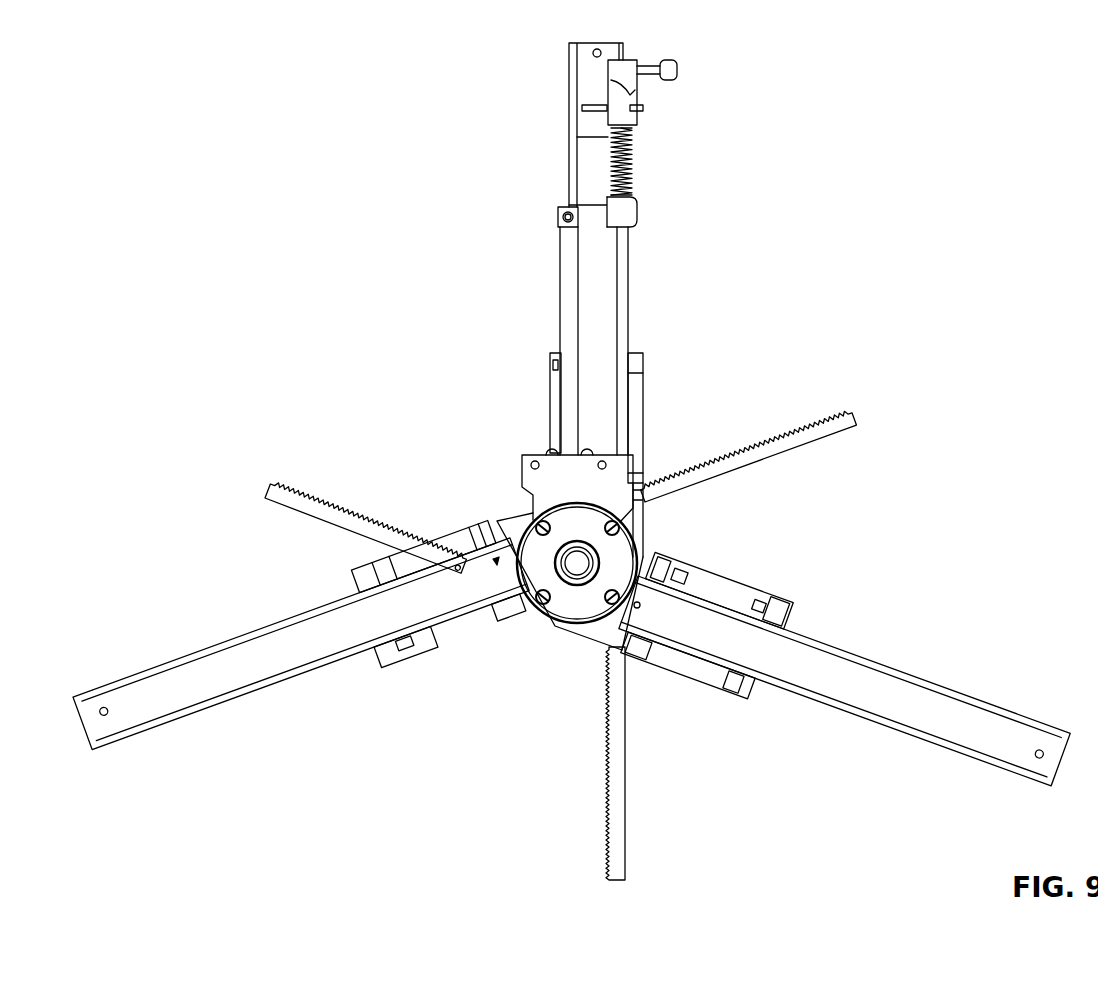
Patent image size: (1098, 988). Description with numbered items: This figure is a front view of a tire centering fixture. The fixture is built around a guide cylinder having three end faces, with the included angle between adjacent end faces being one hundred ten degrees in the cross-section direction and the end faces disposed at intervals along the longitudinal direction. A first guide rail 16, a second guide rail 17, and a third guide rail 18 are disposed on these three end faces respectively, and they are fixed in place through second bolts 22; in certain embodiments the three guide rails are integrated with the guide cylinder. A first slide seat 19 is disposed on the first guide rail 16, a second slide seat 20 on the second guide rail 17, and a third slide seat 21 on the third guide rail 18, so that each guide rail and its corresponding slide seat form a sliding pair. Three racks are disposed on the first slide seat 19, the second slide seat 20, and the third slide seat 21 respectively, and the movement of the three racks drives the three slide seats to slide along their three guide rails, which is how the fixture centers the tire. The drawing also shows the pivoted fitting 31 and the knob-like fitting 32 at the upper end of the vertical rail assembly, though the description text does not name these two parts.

The first guide rail 16 is at (596, 296).
The second guide rail 17 is at (303, 642).
The third guide rail 18 is at (838, 670).
The first slide seat 19 is at (633, 392).
The second slide seat 20 is at (365, 580).
The third slide seat 21 is at (722, 602).
The second bolts 22 is at (662, 571).
The pivot pin 31 is at (560, 215).
The locking valve knob 32 is at (628, 55).